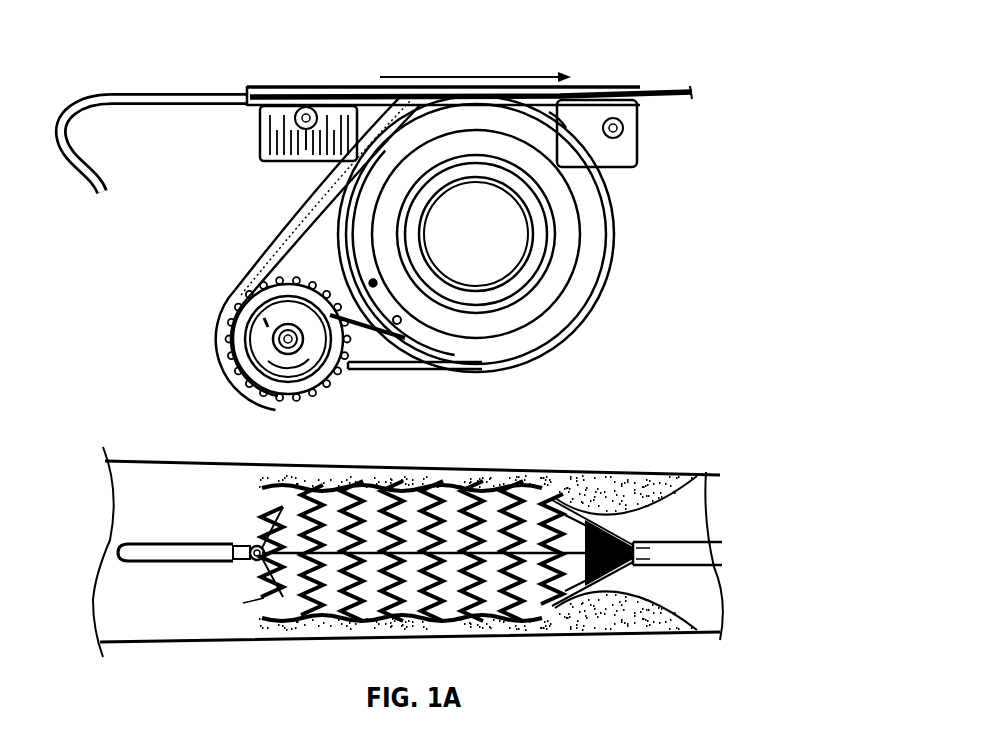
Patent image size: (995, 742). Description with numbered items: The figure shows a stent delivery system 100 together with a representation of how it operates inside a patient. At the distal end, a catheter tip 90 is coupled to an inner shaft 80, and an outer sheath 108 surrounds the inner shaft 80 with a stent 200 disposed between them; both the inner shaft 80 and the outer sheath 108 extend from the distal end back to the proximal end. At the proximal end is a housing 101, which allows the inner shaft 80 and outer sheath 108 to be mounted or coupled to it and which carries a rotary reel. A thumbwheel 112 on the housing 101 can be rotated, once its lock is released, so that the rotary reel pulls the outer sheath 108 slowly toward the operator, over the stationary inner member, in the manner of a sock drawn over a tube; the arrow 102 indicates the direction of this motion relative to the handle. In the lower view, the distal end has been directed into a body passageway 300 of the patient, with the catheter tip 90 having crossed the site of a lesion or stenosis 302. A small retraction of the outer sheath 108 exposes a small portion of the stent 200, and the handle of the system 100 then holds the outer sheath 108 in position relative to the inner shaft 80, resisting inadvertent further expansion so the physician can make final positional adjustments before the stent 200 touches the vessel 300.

The stent delivery system 100 is at (648, 32).
The direction of advancement 102 is at (472, 78).
The inner shaft 80 is at (650, 90).
The outer sheath 108 is at (172, 104).
The housing 101 is at (623, 230).
The thumbwheel 112 is at (262, 387).
The catheter tip 90 is at (162, 543).
The stent 200 is at (265, 522).
The body passageway 300 is at (600, 477).
The lesion or stenosis 302 is at (516, 480).